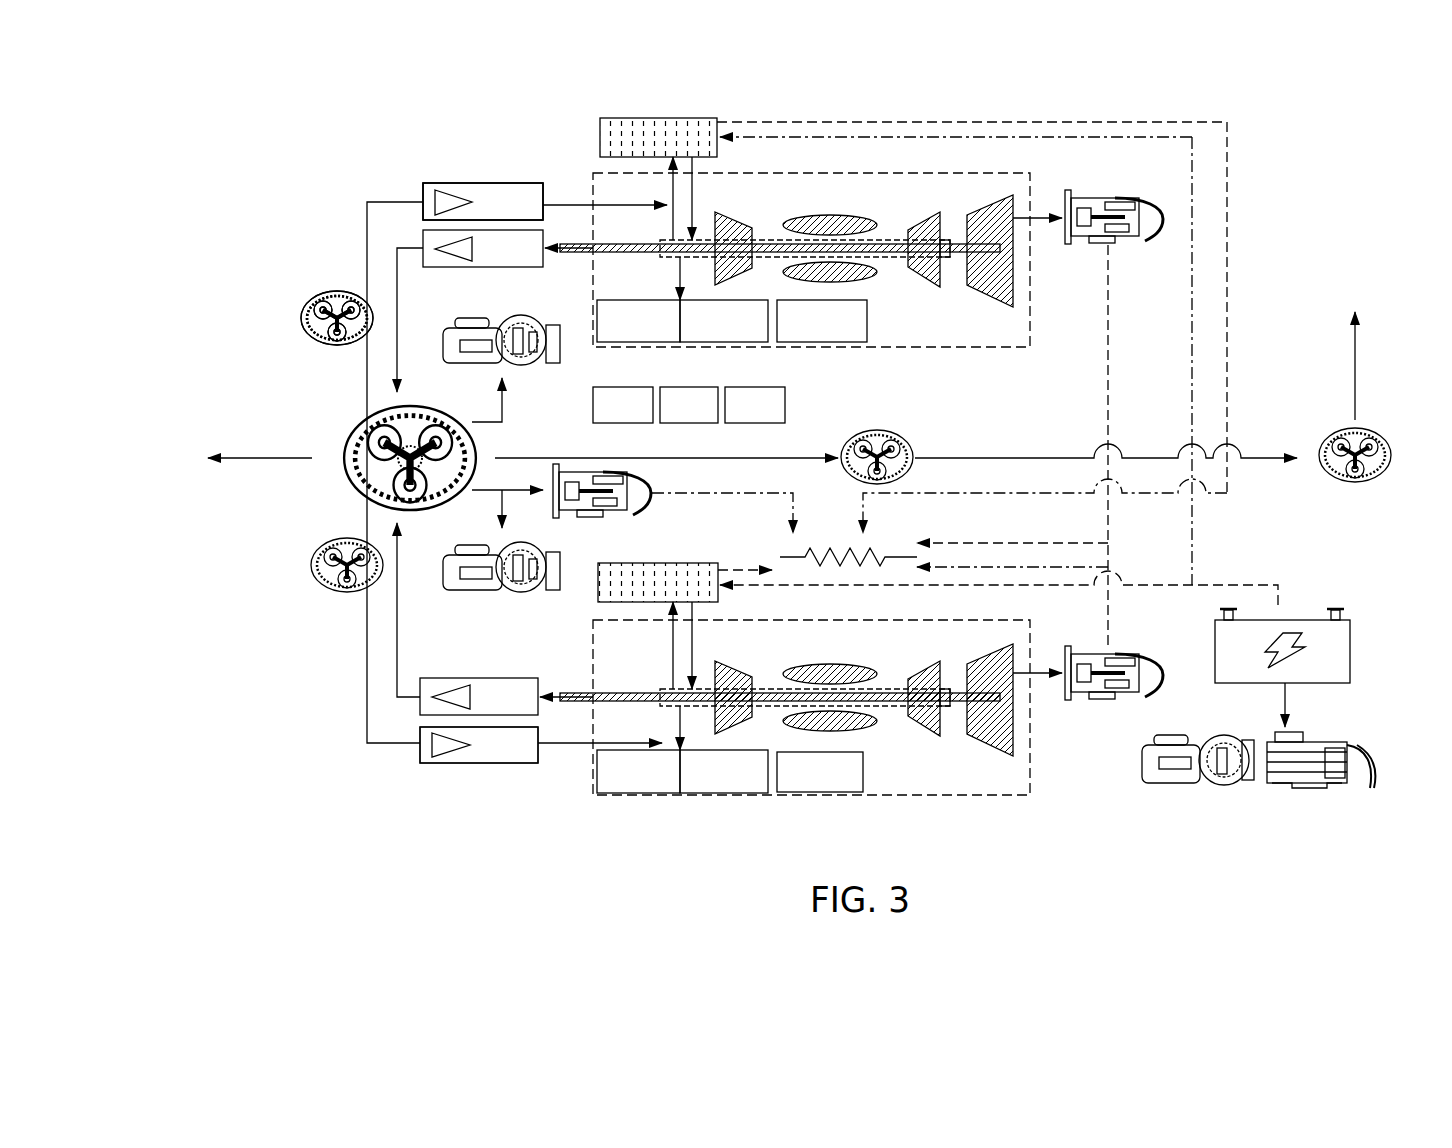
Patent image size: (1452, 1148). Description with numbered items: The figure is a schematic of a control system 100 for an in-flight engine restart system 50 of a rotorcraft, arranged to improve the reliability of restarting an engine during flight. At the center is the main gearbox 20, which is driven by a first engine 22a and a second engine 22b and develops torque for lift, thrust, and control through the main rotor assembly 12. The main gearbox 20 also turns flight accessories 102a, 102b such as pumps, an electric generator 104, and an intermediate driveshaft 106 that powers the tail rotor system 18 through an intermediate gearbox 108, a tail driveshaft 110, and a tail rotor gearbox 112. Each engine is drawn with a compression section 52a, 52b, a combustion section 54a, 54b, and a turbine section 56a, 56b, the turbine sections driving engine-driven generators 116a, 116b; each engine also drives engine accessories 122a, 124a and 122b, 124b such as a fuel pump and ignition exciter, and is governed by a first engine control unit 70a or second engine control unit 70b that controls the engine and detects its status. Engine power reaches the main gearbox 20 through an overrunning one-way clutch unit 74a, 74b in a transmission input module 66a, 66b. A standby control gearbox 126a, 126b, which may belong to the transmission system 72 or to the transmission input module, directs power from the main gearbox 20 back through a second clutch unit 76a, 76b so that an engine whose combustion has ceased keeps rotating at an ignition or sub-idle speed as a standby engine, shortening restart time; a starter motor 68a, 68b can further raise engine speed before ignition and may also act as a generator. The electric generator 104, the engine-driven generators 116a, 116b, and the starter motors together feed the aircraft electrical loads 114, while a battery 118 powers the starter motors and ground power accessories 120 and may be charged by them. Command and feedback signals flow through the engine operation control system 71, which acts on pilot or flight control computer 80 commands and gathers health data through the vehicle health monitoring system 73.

The main rotor assembly 12 is at (258, 460).
The tail rotor system 18 is at (1365, 358).
The main gearbox 20 is at (437, 510).
The first engine 22a is at (912, 173).
The second engine 22b is at (892, 620).
The in-flight engine restart system 50 is at (423, 168).
The compression section 52a is at (738, 220).
The compression section 52b is at (738, 665).
The combustion section 54a is at (840, 215).
The combustion section 54b is at (850, 665).
The turbine section 56a is at (1000, 296).
The turbine section 56b is at (980, 730).
The transmission input module 66a is at (448, 170).
The transmission input module 66b is at (493, 778).
The starter motor 68a is at (660, 118).
The starter motor 68b is at (660, 563).
The first engine control unit 70a is at (855, 320).
The second engine control unit 70b is at (805, 795).
The engine operation control system 71 is at (690, 423).
The transmission system 72 is at (320, 272).
The vehicle health monitoring system 73 is at (755, 387).
The clutch unit 74a is at (530, 268).
The clutch unit 74b is at (535, 678).
The clutch unit 76a is at (522, 183).
The clutch unit 76b is at (527, 763).
The flight control computer 80 is at (615, 387).
The control system 100 is at (1282, 172).
The flight accessory 102a is at (548, 372).
The flight accessory 102b is at (515, 596).
The electric generator 104 is at (599, 524).
The intermediate driveshaft 106 is at (737, 458).
The intermediate gearbox 108 is at (887, 432).
The tail driveshaft 110 is at (980, 458).
The tail rotor gearbox 112 is at (1355, 485).
The aircraft electrical loads 114 is at (835, 552).
The engine-driven generator 116a is at (1097, 248).
The engine-driven generator 116b is at (1105, 700).
The battery 118 is at (1350, 650).
The ground power accessories 120 is at (1268, 790).
The engine accessory 122a is at (630, 322).
The engine accessory 122b is at (635, 788).
The engine accessory 124a is at (710, 305).
The engine accessory 124b is at (722, 781).
The standby control gearbox 126a is at (335, 350).
The standby control gearbox 126b is at (333, 592).